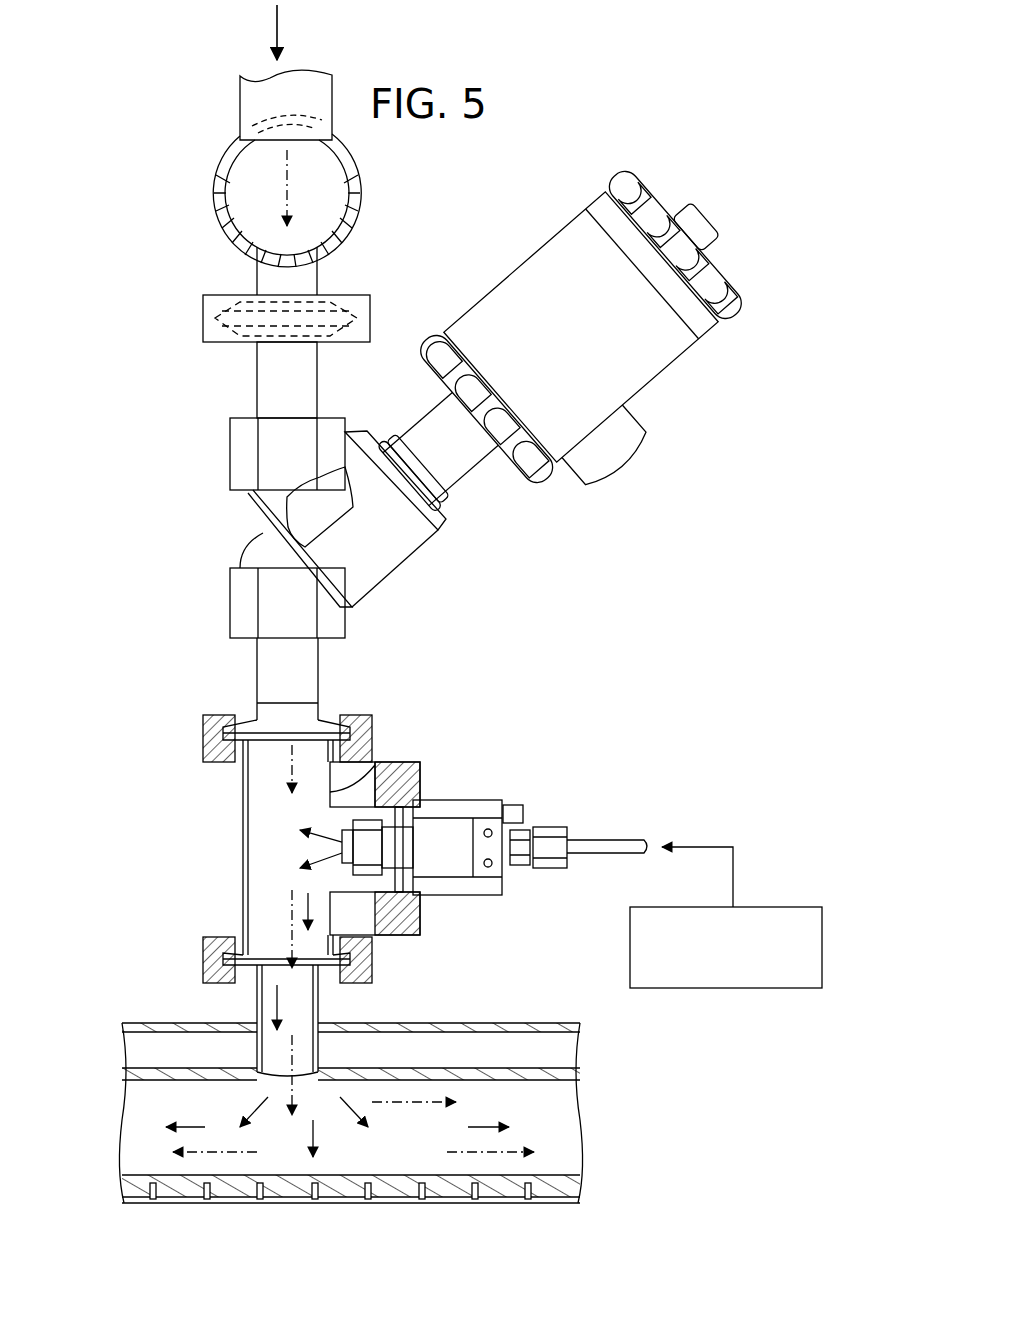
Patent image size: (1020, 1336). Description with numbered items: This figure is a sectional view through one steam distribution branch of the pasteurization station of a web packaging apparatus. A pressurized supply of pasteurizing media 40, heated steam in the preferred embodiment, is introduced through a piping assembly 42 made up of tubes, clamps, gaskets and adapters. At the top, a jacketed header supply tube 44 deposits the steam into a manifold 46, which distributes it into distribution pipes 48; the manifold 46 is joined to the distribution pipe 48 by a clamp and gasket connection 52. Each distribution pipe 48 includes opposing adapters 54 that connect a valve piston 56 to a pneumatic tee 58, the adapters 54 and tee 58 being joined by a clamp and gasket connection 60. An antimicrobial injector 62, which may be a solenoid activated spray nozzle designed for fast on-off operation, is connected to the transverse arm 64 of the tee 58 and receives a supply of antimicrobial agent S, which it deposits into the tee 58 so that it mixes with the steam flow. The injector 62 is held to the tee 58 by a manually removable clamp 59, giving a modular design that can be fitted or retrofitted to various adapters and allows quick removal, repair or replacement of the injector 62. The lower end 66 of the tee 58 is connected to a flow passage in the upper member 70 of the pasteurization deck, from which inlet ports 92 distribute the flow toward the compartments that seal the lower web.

The pasteurizing media 40 is at (276, 33).
The piping assembly 42 is at (148, 610).
The jacketed header supply tube 44 is at (250, 97).
The manifold 46 is at (357, 194).
The distribution pipe 48 is at (140, 477).
The clamp and gasket connection 52 is at (203, 314).
The adapter 54 is at (270, 388).
The valve piston 56 is at (537, 287).
The pneumatic tee 58 is at (243, 853).
The manually removable clamp 59 is at (398, 936).
The clamp and gasket connection 60 is at (212, 728).
The antimicrobial injector 62 is at (480, 767).
The transverse arm 64 is at (347, 801).
The lower end 66 is at (182, 962).
The upper member 70 is at (514, 1023).
The inlet ports 92 is at (153, 1200).
The antimicrobial agent S is at (630, 952).